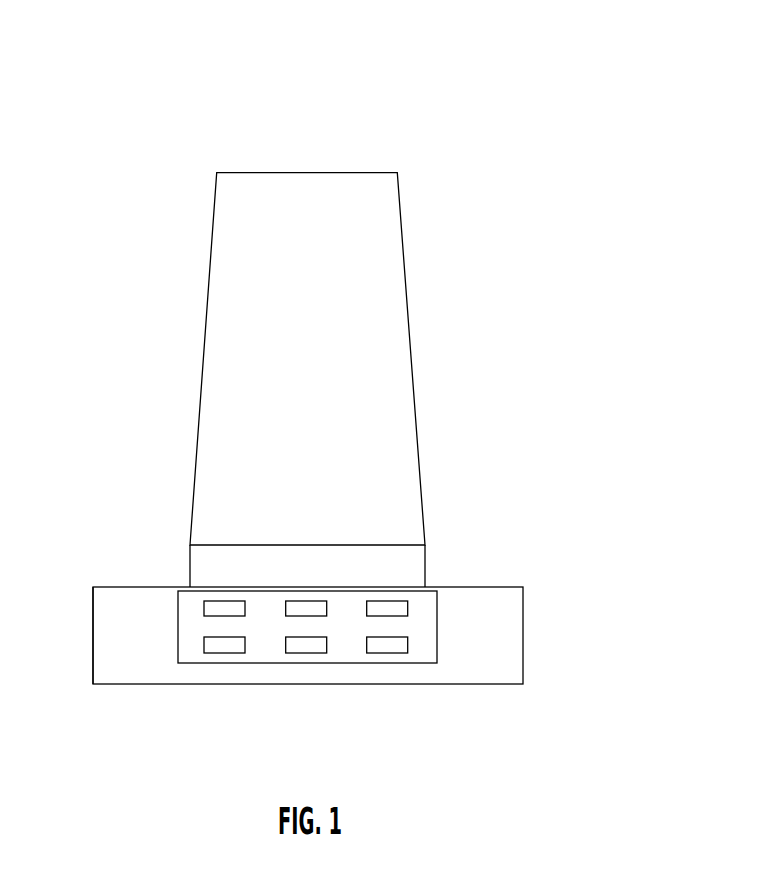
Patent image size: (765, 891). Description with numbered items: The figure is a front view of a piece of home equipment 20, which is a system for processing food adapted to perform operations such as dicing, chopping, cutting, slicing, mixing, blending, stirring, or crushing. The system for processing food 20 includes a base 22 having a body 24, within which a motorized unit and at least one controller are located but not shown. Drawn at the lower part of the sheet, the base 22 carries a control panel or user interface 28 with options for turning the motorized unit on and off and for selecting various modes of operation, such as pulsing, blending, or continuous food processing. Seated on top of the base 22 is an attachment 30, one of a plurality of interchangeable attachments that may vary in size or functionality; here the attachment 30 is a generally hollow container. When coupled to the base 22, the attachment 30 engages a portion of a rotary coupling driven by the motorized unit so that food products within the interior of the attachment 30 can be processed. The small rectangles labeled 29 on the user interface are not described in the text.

The piece of home equipment 20 is at (164, 104).
The attachment 30 is at (456, 250).
The base 22 is at (616, 635).
The body 24 is at (108, 635).
The user interface 28 is at (423, 625).
The cooling passages 29 is at (303, 607).